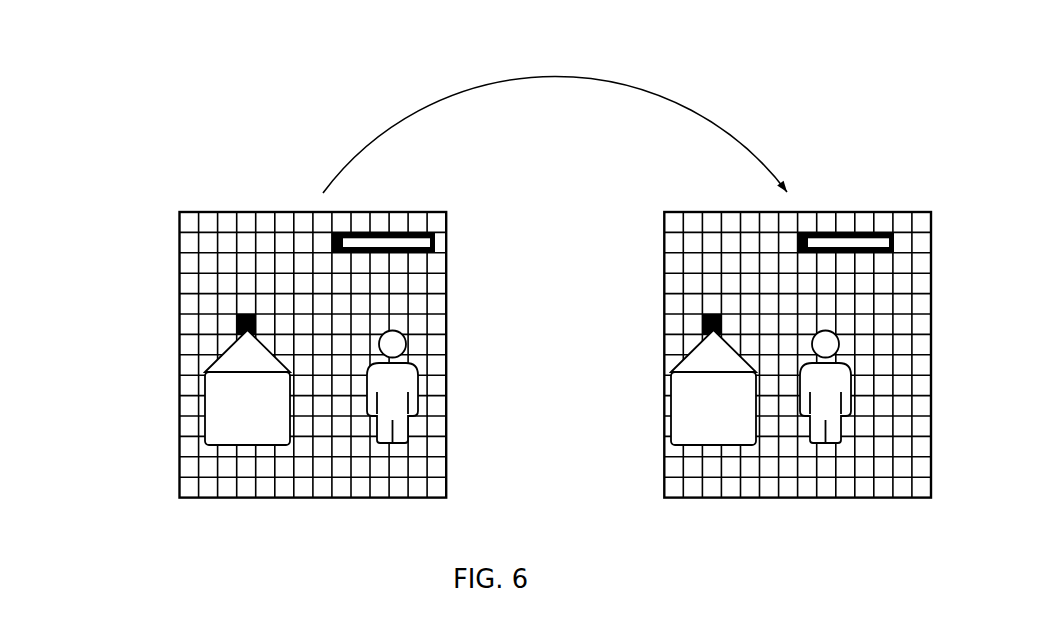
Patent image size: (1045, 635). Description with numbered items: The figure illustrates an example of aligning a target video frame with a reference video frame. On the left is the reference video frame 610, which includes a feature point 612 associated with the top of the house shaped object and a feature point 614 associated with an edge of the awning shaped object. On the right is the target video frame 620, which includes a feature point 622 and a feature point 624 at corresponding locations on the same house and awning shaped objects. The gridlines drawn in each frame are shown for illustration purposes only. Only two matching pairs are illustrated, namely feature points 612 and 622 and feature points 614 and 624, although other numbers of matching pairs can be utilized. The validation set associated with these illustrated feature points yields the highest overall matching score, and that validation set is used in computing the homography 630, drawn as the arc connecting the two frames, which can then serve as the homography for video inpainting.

The reference video frame 610 is at (180, 210).
The feature point 612 is at (228, 323).
The feature point 614 is at (325, 233).
The target video frame 620 is at (878, 208).
The feature point 622 is at (698, 323).
The feature point 624 is at (795, 237).
The homography 630 is at (555, 98).